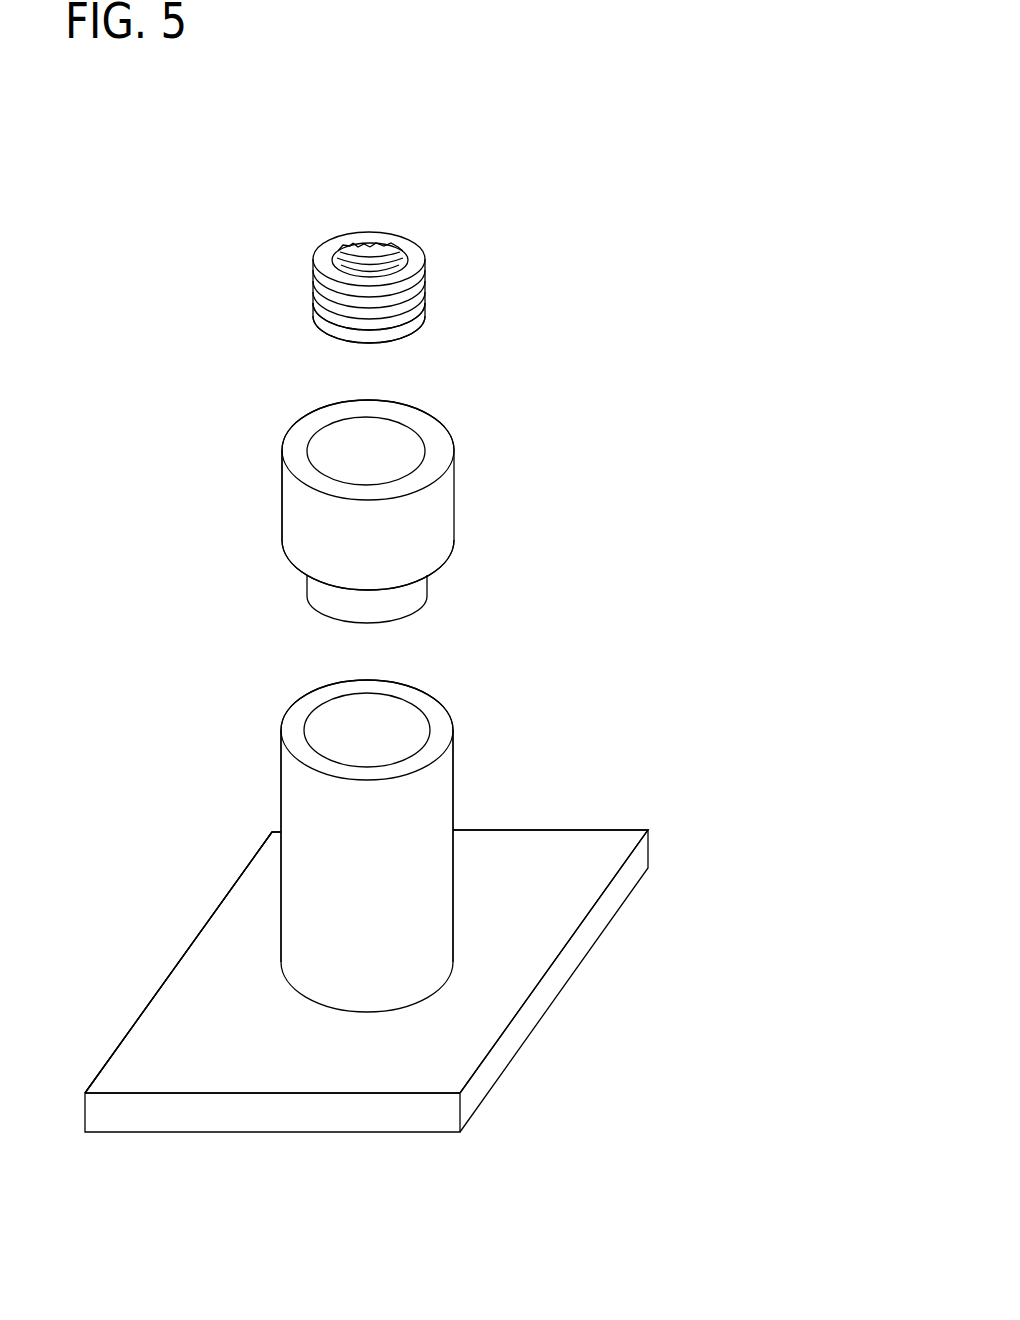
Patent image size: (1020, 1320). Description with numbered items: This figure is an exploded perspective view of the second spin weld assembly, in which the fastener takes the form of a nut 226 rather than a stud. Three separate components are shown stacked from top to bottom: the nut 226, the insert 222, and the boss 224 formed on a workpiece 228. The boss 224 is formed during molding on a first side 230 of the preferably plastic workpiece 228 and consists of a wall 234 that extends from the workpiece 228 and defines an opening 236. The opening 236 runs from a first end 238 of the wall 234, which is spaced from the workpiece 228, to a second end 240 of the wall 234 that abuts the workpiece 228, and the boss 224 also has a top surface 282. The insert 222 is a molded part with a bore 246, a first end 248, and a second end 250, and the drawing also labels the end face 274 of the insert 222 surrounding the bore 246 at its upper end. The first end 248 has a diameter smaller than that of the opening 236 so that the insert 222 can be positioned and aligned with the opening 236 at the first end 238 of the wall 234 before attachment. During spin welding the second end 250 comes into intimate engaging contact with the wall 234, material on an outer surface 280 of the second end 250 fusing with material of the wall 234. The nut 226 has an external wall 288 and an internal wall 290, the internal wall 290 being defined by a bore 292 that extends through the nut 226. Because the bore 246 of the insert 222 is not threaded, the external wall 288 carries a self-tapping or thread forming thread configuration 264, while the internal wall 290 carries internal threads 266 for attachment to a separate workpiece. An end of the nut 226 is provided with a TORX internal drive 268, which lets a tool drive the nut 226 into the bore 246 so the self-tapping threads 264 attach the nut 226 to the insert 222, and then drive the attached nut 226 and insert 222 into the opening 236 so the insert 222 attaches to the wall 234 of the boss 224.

The insert 222 is at (453, 518).
The boss 224 is at (453, 780).
The nut 226 is at (423, 288).
The workpiece 228 is at (513, 985).
The first side 230 is at (612, 852).
The wall 234 is at (427, 857).
The opening 236 is at (370, 733).
The first end 238 is at (282, 727).
The second end 240 is at (282, 963).
The bore 246 is at (390, 452).
The first end 248 is at (400, 603).
The second end 250 is at (302, 513).
The self-tapping thread configuration 264 is at (422, 317).
The internal threads 266 is at (402, 246).
The TORX internal drive 268 is at (378, 243).
The top surface of body member 274 is at (438, 455).
The outer surface 280 is at (282, 543).
The top surface 282 is at (430, 710).
The external wall 288 is at (315, 326).
The internal wall 290 is at (342, 243).
The bore 292 is at (360, 242).